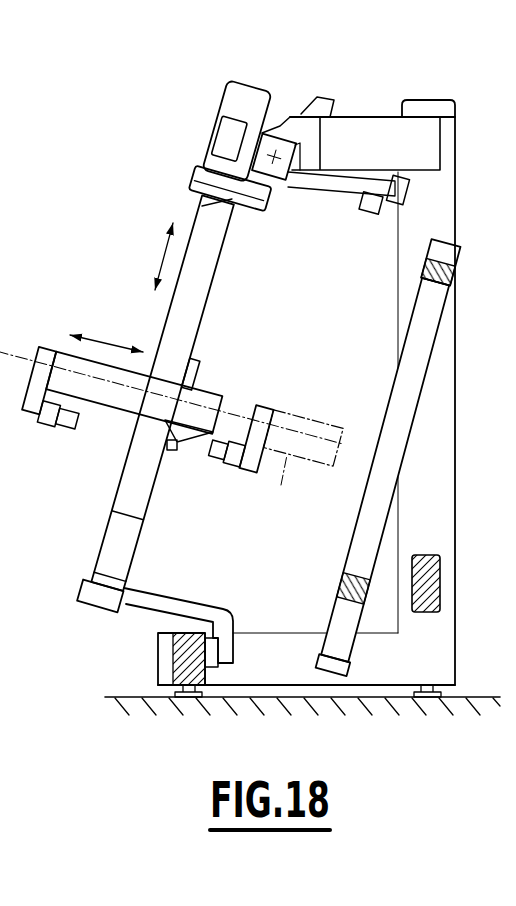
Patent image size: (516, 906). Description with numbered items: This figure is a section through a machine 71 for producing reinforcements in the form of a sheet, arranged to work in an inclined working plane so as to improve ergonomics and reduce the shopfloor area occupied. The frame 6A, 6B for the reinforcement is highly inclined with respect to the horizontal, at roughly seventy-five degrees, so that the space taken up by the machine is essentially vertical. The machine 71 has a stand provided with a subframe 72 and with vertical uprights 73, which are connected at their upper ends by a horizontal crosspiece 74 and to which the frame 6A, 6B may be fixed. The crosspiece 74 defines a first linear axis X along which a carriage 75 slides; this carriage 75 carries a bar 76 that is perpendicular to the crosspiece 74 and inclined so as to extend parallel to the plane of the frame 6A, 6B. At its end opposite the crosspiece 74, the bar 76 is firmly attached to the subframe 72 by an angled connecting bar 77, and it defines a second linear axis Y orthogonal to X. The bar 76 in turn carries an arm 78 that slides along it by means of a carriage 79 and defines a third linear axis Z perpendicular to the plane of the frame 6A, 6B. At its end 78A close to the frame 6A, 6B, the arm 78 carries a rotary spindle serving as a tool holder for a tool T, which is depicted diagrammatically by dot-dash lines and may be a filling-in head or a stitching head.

The machine 71 is at (138, 180).
The subframe 72 is at (270, 660).
The vertical uprights 73 is at (440, 447).
The horizontal crosspiece 74 is at (277, 148).
The carriage 75 is at (212, 120).
The bar 76 is at (207, 273).
The angled connecting bar 77 is at (160, 597).
The arm 78 is at (122, 393).
The end of arm 78A is at (262, 395).
The carriage 79 is at (200, 379).
The frame 6A is at (428, 259).
The frame 6B is at (416, 363).